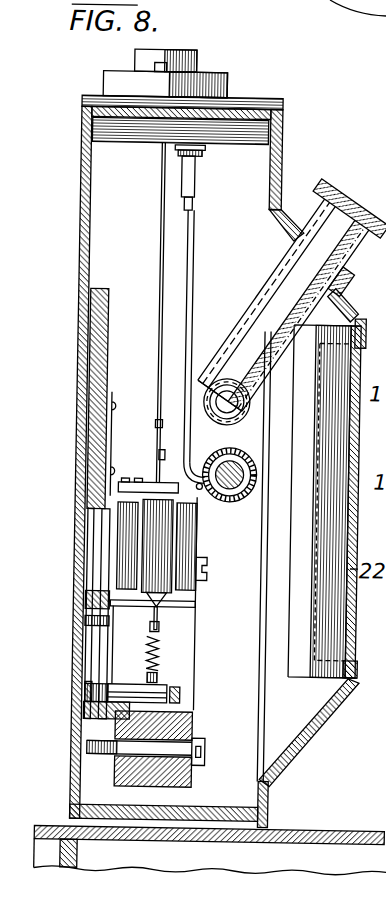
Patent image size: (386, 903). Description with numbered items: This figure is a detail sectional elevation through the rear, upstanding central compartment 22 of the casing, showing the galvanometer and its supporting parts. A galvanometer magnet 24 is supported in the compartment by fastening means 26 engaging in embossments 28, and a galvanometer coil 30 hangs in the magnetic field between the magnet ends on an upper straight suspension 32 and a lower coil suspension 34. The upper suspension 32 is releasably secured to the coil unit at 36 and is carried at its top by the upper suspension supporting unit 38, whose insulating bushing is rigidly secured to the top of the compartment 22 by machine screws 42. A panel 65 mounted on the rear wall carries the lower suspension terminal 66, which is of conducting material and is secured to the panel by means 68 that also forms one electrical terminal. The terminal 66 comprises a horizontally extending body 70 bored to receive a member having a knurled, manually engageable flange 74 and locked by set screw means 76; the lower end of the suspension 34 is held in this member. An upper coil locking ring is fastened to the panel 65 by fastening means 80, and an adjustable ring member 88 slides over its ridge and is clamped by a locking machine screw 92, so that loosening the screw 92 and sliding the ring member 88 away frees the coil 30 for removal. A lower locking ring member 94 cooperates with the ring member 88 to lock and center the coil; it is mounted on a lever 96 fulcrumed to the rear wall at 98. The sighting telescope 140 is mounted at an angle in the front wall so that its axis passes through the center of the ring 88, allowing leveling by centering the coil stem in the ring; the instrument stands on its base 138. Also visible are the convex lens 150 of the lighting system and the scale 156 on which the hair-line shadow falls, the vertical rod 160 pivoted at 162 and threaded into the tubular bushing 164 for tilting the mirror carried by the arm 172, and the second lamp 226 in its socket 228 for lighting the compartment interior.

The central compartment 22 is at (236, 132).
The galvanometer magnet 24 is at (196, 780).
The fastening means 26 is at (208, 580).
The embossments 28 is at (111, 770).
The galvanometer coil 30 is at (171, 544).
The upper straight suspension 32 is at (166, 256).
The lower coil suspension 34 is at (161, 647).
The releasable securing point 36 is at (156, 425).
The upper suspension supporting unit 38 is at (191, 62).
The machine screws 42 is at (176, 55).
The panel 65 is at (106, 317).
The lower suspension terminal 66 is at (131, 683).
The securing means 68 is at (93, 694).
The horizontally extending body 70 is at (114, 684).
The knurled annular flange 74 is at (164, 680).
The set screw means 76 is at (181, 693).
The fastening means 80 is at (113, 403).
The adjustable ring member 88 is at (186, 488).
The locking machine screw 92 is at (127, 484).
The lower locking ring member 94 is at (172, 606).
The lever 96 is at (111, 600).
The fulcrum 98 is at (90, 621).
The base 138 is at (301, 836).
The sighting telescope 140 is at (316, 203).
The convex lens 150 is at (245, 470).
The ground glass screen or scale 156 is at (211, 450).
The vertical rod 160 is at (185, 270).
The pivot 162 is at (231, 462).
The tubular bushing 164 is at (190, 183).
The arm 172 is at (250, 491).
The second lamp 226 is at (247, 413).
The socket 228 is at (240, 407).